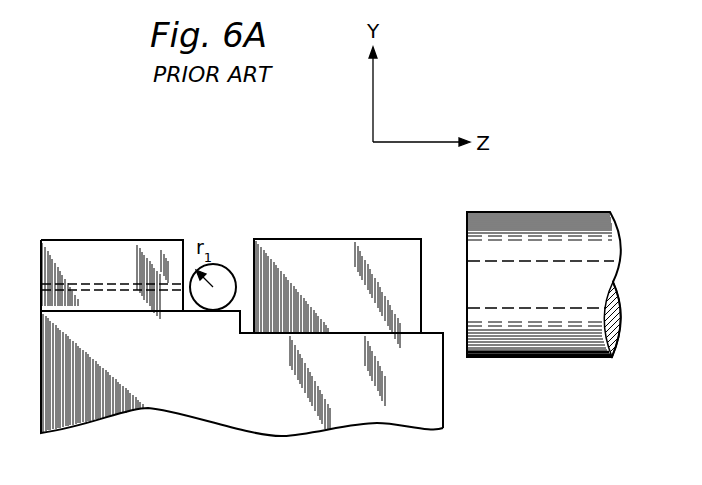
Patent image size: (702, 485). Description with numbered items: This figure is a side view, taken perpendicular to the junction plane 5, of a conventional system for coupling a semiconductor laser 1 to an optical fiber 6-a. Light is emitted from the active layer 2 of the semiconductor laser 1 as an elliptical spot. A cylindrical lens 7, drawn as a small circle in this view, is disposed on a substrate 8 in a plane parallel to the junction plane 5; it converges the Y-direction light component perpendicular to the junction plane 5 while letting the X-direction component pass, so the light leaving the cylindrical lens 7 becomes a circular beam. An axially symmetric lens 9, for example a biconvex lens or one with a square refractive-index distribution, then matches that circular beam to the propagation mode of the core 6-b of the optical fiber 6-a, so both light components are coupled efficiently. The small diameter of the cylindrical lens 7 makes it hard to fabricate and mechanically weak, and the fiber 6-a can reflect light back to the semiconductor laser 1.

The semiconductor laser 1 is at (141, 285).
The active layer 2 is at (108, 297).
The junction plane 5 is at (76, 283).
The cylindrical lens 7 is at (226, 270).
The substrate 8 is at (277, 430).
The axially symmetric lens 9 is at (345, 240).
The optical fiber 6-a is at (568, 212).
The core 6-b is at (613, 285).